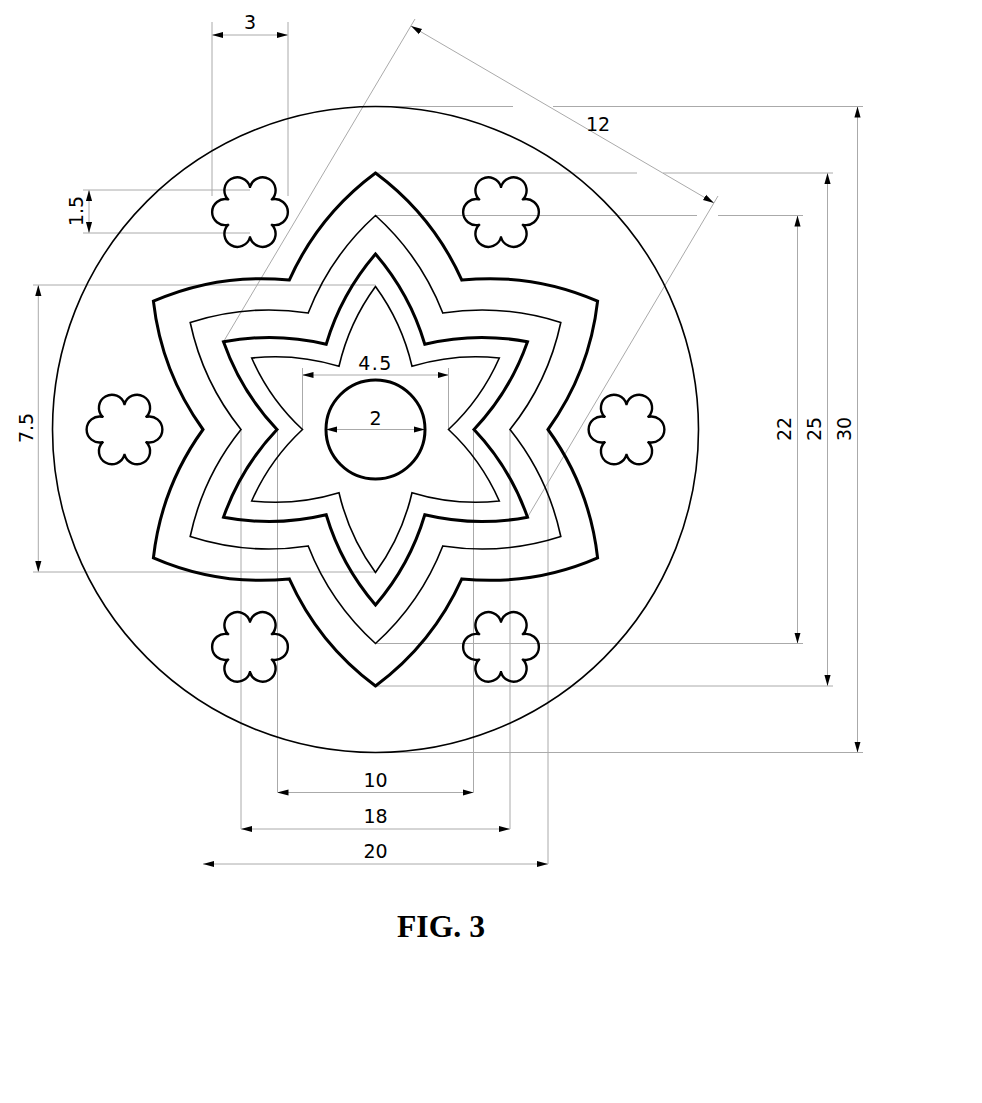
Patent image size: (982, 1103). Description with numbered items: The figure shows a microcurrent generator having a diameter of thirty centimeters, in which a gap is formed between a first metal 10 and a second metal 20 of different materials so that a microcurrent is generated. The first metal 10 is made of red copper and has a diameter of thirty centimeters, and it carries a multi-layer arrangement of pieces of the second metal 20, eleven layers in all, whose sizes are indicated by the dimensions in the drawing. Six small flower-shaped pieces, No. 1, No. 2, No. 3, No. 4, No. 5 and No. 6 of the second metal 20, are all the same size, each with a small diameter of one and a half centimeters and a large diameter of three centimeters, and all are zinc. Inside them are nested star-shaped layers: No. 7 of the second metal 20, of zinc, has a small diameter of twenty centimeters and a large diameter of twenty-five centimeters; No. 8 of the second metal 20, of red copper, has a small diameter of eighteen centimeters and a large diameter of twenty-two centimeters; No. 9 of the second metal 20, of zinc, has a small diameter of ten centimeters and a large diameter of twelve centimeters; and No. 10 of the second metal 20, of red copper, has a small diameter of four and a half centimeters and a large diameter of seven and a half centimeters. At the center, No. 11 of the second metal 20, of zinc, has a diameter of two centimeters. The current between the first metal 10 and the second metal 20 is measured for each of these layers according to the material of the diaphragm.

The No. 1 of the second metal 1 is at (250, 212).
The No. 2 of the second metal 2 is at (501, 212).
The No. 3 of the second metal 3 is at (627, 430).
The No. 4 of the second metal 4 is at (501, 647).
The No. 5 of the second metal 5 is at (250, 647).
The No. 6 of the second metal 6 is at (125, 430).
The No. 7 of the second metal 7 is at (375, 429).
The No. 8 of the second metal 8 is at (375, 430).
The No. 9 of the second metal 9 is at (376, 429).
The first metal 10 is at (122, 745).
The No. 11 of the second metal 11 is at (375, 429).
The second metal 20 is at (467, 429).